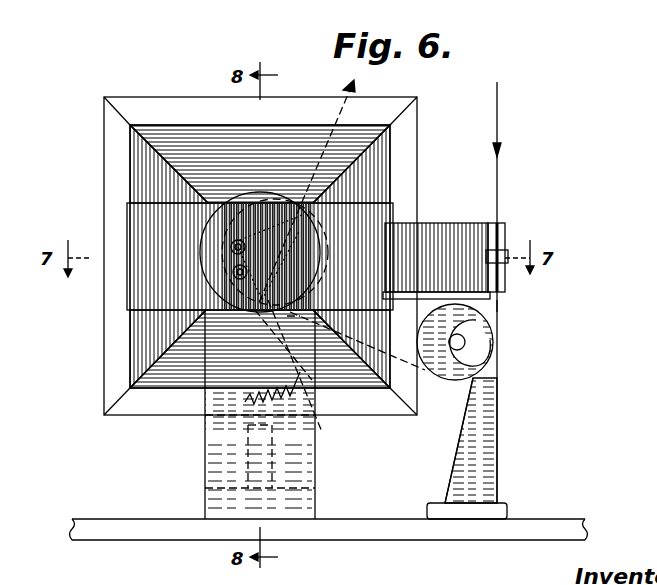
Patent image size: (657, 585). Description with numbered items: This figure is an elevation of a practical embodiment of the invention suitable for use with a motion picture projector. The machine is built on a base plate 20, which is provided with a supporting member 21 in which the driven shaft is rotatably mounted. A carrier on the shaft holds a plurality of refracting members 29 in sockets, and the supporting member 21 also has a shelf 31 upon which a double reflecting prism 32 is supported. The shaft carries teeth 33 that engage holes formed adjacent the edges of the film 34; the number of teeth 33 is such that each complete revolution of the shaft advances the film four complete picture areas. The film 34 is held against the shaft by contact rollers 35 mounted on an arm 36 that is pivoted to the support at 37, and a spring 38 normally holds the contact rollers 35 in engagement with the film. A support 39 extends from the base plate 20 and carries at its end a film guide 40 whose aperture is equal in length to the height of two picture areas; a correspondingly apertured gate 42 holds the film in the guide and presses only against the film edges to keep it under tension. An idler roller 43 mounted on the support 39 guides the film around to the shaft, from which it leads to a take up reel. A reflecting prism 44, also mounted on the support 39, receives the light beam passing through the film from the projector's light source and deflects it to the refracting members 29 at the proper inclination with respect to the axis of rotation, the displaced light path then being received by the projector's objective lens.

The base plate 20 is at (136, 530).
The supporting member 21 is at (218, 443).
The refracting members 29 is at (143, 133).
The shelf 31 is at (207, 338).
The double reflecting prism 32 is at (148, 222).
The teeth 33 is at (277, 196).
The film 34 is at (497, 122).
The contact rollers 35 is at (236, 270).
The arm 36 is at (264, 345).
The pivot 37 is at (281, 366).
The spring 38 is at (300, 402).
The support 39 is at (480, 440).
The film guide 40 is at (500, 235).
The gate 42 is at (505, 247).
The idler roller 43 is at (470, 382).
The reflecting prism 44 is at (462, 240).